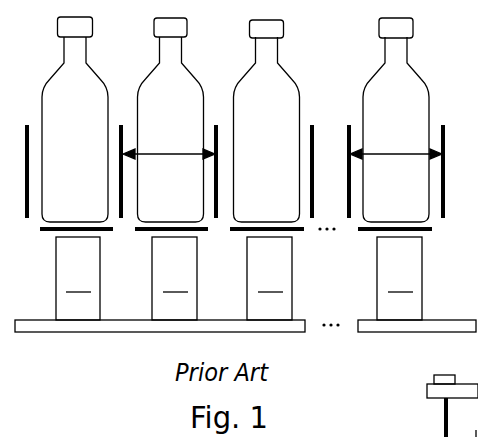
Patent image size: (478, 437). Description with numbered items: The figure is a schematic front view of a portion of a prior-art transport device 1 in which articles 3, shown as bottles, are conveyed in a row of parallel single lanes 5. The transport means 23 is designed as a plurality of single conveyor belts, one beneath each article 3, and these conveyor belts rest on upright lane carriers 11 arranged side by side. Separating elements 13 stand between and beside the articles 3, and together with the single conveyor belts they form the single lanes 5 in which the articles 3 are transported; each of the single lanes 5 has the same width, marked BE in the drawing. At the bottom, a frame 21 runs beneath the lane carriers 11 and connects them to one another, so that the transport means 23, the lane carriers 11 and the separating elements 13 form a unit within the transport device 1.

The transport device 1 is at (82, 340).
The article 3 is at (94, 72).
The single lane 5 is at (437, 138).
The lane carrier 11 is at (239, 278).
The separating element 13 is at (348, 128).
The frame 21 is at (448, 325).
The transport means 23 is at (56, 232).